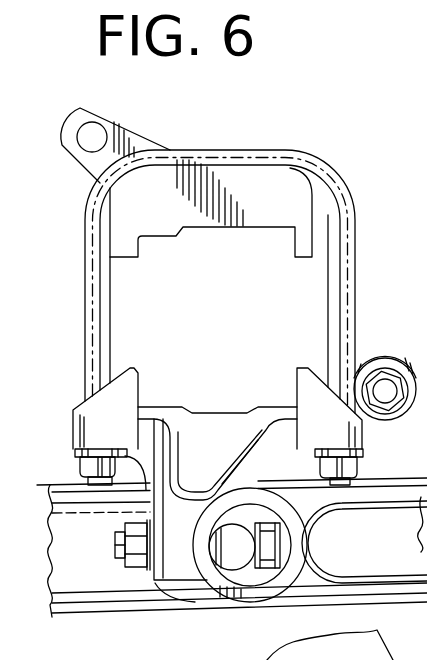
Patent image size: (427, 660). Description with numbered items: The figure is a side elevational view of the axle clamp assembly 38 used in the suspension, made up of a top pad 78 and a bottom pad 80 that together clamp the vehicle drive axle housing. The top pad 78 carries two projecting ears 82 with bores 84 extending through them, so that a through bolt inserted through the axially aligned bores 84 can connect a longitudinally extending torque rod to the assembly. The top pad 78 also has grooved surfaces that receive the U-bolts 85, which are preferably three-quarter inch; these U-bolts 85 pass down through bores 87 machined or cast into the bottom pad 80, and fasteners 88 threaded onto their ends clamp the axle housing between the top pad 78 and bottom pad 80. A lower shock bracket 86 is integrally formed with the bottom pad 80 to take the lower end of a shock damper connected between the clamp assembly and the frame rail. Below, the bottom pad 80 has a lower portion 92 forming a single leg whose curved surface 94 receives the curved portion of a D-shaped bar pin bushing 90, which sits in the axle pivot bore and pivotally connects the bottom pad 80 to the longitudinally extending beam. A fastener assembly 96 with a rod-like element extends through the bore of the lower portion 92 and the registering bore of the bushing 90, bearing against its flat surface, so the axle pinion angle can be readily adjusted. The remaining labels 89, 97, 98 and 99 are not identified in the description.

The axle clamp assembly 38 is at (289, 113).
The top pad 78 is at (281, 208).
The bottom pad 80 is at (330, 424).
The projecting ears 82 is at (138, 138).
The bores 84 is at (95, 130).
The U-bolts 85 is at (343, 272).
The lower shock bracket 86 is at (393, 353).
The bores 87 is at (73, 457).
The fasteners 88 is at (137, 455).
The bolt shank 89 is at (360, 472).
The D-shaped bar pin bushing 90 is at (245, 553).
The lower portion 92 is at (202, 535).
The curved surface 94 is at (210, 543).
The fastener assembly 96 is at (137, 558).
The frame rail 97 is at (403, 583).
The frame member 98 is at (417, 72).
The frame member 99 is at (417, 137).